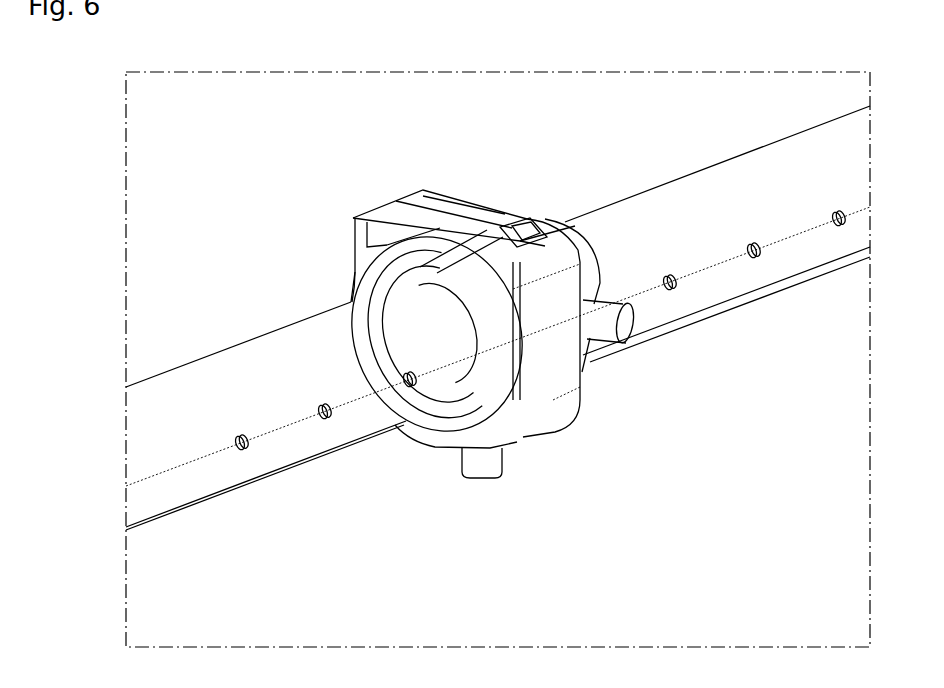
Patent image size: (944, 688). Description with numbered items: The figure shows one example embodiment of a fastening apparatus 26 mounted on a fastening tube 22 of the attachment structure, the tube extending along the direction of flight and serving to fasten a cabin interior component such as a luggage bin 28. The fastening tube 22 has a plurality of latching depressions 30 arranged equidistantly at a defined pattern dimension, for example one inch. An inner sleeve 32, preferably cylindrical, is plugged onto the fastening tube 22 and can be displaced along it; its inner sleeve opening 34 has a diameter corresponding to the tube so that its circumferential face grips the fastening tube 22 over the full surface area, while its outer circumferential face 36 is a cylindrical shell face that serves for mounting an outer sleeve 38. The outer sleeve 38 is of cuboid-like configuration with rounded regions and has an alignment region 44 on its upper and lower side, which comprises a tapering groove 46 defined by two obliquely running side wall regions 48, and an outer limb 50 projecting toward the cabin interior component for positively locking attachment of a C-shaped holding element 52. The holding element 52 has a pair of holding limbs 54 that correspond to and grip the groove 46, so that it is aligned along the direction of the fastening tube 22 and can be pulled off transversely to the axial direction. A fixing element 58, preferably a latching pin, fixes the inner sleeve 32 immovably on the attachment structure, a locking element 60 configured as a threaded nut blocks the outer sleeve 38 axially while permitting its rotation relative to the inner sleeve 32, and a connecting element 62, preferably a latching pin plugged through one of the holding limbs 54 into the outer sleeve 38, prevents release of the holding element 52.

The fastening tube 22 is at (248, 353).
The fastening apparatus 26 is at (383, 97).
The luggage bin 28 is at (277, 97).
The latching depressions 30 is at (238, 443).
The inner sleeve 32 is at (427, 277).
The inner sleeve opening 34 is at (463, 313).
The outer circumferential face 36 is at (488, 355).
The outer sleeve 38 is at (548, 377).
The alignment region 44 is at (508, 207).
The tapering groove 46 is at (532, 242).
The side wall regions 48 is at (531, 238).
The outer limb 50 is at (380, 240).
The holding element 52 is at (352, 254).
The holding limbs 54 is at (427, 207).
The fixing element 58 is at (628, 323).
The locking element 60 is at (487, 412).
The connecting element 62 is at (483, 470).